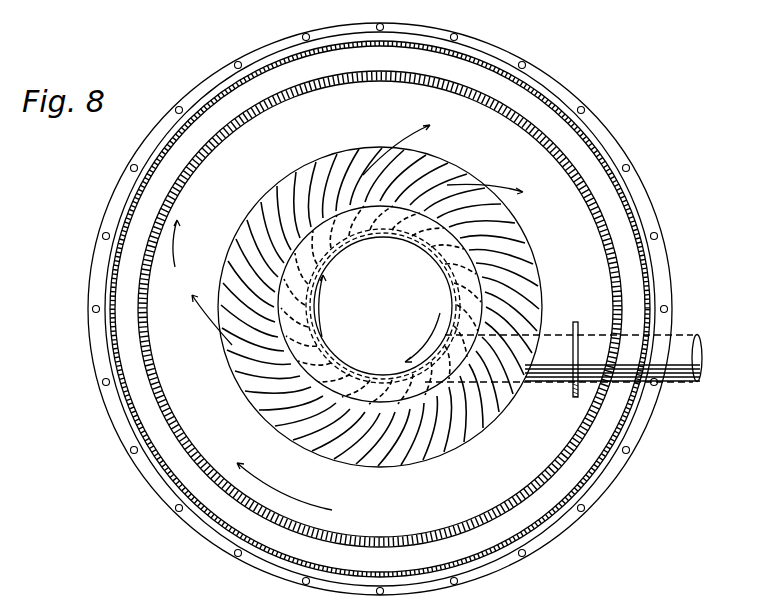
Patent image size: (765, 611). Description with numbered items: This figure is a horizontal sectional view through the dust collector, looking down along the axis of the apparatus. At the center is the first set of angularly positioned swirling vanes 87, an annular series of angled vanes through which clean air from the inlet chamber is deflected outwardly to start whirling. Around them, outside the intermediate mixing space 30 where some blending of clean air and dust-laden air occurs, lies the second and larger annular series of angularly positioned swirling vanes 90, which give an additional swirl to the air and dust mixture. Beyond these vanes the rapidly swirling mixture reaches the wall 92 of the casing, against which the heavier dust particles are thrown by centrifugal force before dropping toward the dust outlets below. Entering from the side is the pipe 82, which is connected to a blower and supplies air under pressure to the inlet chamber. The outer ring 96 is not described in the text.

The mixing space 30 is at (265, 312).
The pipe 82 is at (561, 358).
The first set of angularly positioned swirling vanes 87 is at (349, 222).
The second set of angularly positioned swirling vanes 90 is at (310, 172).
The wall of the casing 92 is at (146, 338).
The outer rope seal 96 is at (112, 338).